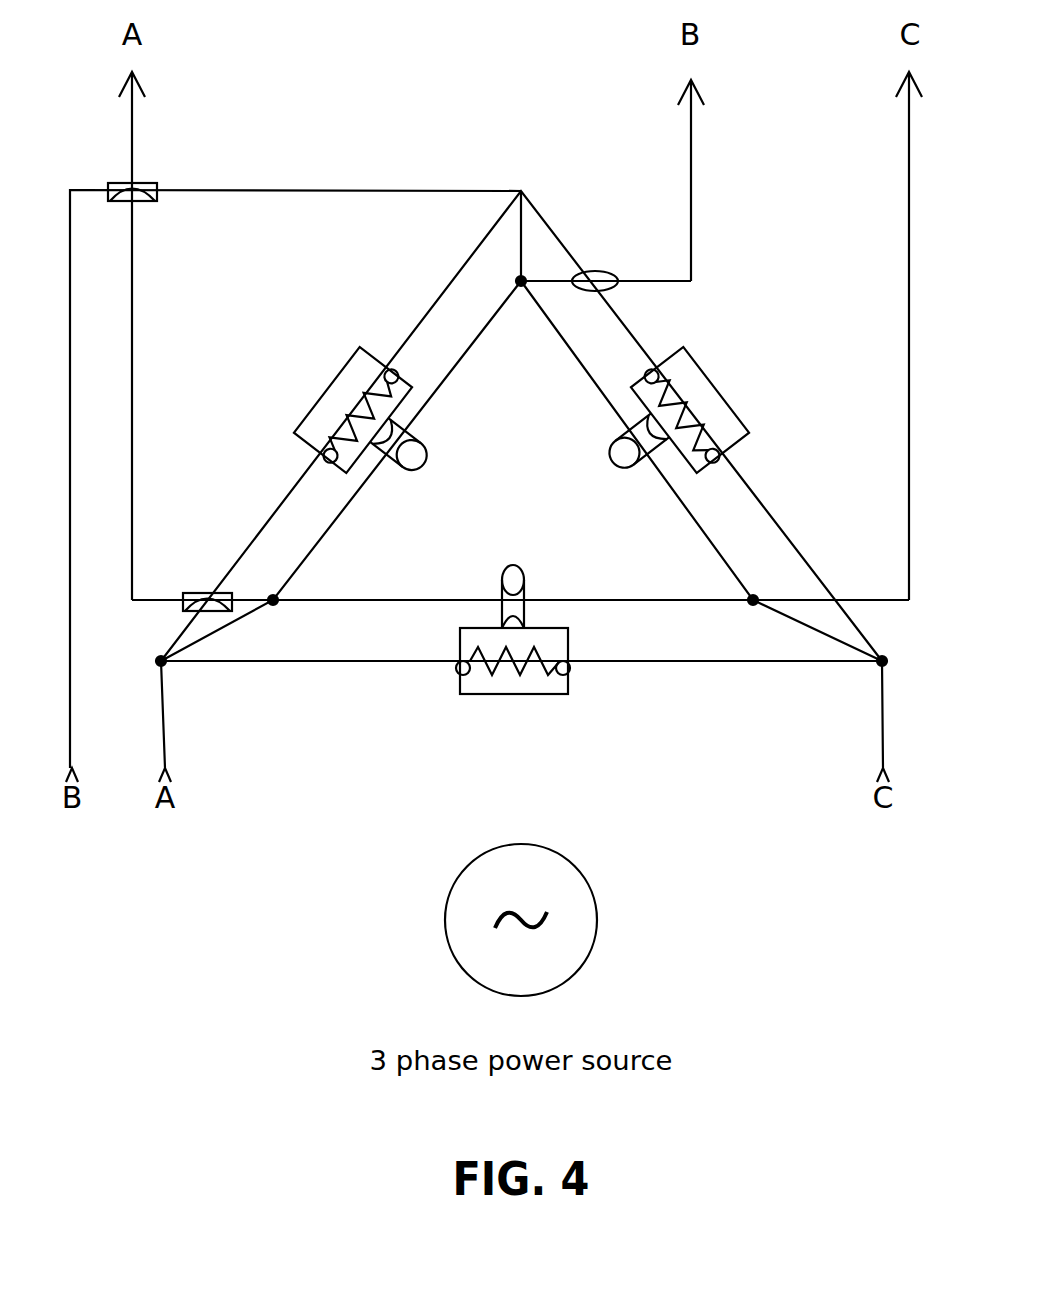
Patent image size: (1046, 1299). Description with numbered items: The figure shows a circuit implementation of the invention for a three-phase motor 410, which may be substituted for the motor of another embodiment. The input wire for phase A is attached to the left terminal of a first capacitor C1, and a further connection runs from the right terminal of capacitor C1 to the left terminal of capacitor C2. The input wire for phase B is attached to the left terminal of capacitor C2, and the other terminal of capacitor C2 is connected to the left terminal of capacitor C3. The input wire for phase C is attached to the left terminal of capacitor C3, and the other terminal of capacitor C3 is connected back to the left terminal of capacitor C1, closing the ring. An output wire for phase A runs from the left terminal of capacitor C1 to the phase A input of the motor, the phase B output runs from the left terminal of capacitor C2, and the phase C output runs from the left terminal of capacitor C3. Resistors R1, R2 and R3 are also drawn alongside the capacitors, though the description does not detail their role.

The three-phase motor 410 is at (595, 892).
The resistor R1 is at (346, 410).
The resistor R2 is at (696, 410).
The resistor R3 is at (513, 686).
The first capacitor C1 is at (425, 452).
The capacitor C2 is at (614, 449).
The capacitor C3 is at (513, 585).